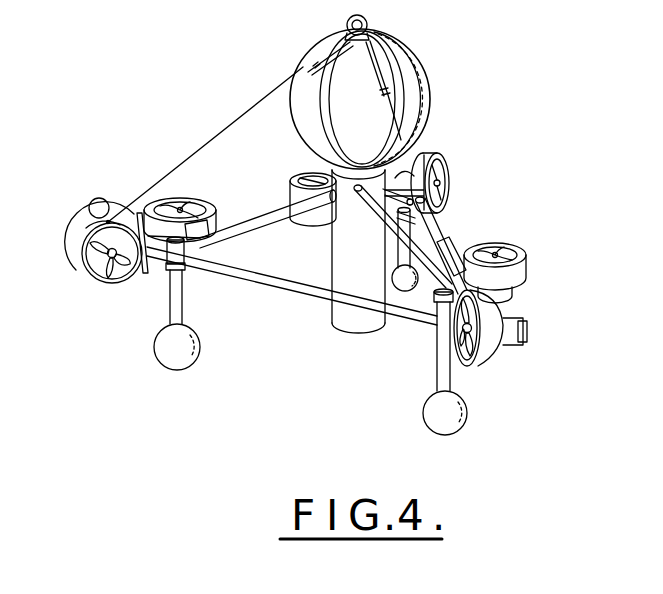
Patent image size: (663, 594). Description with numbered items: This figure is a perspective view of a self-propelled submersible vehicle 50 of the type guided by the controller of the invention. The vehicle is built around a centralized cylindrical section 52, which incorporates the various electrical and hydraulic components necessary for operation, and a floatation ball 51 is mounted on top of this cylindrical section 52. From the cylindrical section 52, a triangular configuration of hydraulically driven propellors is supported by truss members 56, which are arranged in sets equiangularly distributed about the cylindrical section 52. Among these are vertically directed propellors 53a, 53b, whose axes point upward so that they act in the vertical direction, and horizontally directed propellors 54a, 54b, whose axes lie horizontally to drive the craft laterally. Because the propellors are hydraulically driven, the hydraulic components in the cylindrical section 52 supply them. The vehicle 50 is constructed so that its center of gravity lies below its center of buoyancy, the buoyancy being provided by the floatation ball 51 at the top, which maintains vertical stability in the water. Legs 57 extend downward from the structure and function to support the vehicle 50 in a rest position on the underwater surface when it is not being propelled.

The self-propelled submersible vehicle 50 is at (484, 110).
The floatation ball 51 is at (298, 60).
The centralized cylindrical section 52 is at (332, 312).
The vertically directed propellor 53a is at (180, 200).
The vertically directed propellor 53b is at (526, 258).
The horizontally directed propellor 54a is at (82, 265).
The horizontally directed propellor 54b is at (505, 352).
The truss member 56 is at (253, 206).
The leg 57 is at (155, 347).